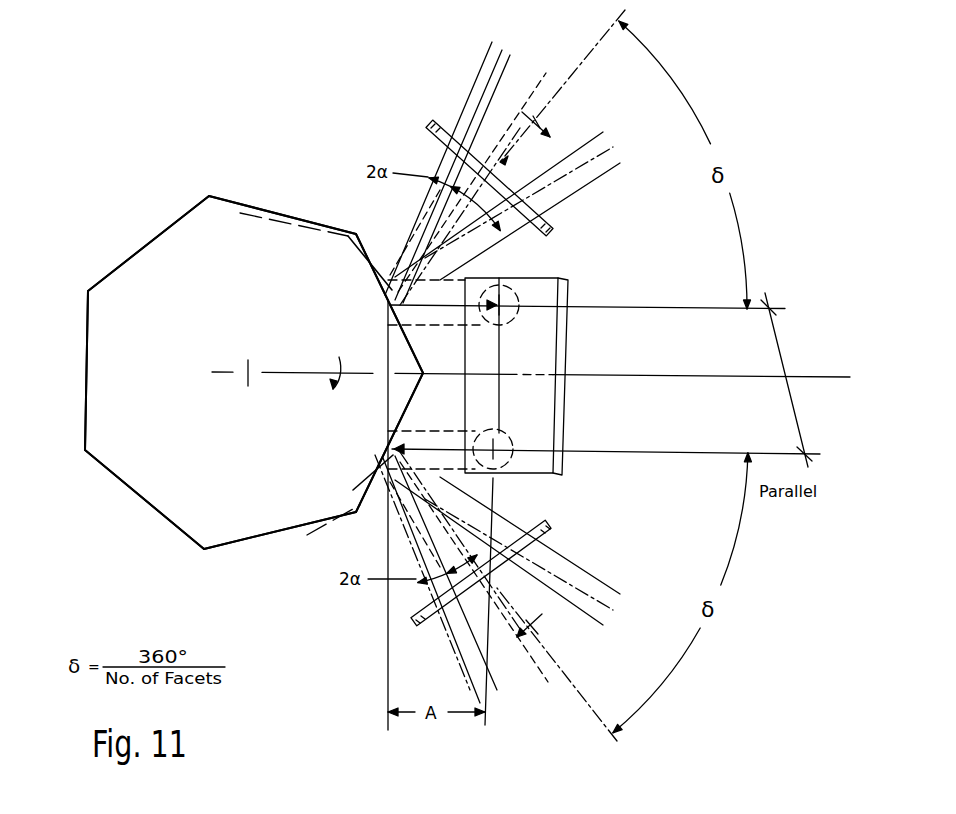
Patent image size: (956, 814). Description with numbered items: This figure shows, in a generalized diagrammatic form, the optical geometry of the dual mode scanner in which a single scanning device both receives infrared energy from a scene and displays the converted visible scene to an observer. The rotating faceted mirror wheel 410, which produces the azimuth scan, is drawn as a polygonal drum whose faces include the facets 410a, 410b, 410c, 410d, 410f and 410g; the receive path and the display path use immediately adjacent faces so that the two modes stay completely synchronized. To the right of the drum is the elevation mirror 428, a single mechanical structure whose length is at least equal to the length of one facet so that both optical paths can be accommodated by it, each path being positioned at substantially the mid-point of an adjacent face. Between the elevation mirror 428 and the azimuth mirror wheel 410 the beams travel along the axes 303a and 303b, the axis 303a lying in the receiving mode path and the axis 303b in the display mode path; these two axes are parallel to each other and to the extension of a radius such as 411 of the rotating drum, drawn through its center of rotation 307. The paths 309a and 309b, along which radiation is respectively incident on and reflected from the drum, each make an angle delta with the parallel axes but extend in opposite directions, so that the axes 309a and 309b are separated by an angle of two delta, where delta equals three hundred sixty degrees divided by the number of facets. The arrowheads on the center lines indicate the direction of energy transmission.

The faceted mirror wheel 410 is at (175, 336).
The facet of mirror wheel 410a is at (365, 255).
The facet of mirror wheel 410b is at (254, 206).
The facet of mirror wheel 410c is at (160, 236).
The facet of mirror wheel 410d is at (85, 372).
The facet of mirror wheel 410f is at (262, 538).
The facet of mirror wheel 410g is at (375, 505).
The radius of the rotating drum 411 is at (305, 382).
The center of rotation 307 is at (250, 369).
The axis of receiving mode optical path 303a is at (455, 308).
The axis of display mode optical path 303b is at (466, 442).
The elevation mirror 428 is at (537, 278).
The axis of incident radiation path 309a is at (508, 157).
The axis of reflected radiation path 309b is at (562, 668).